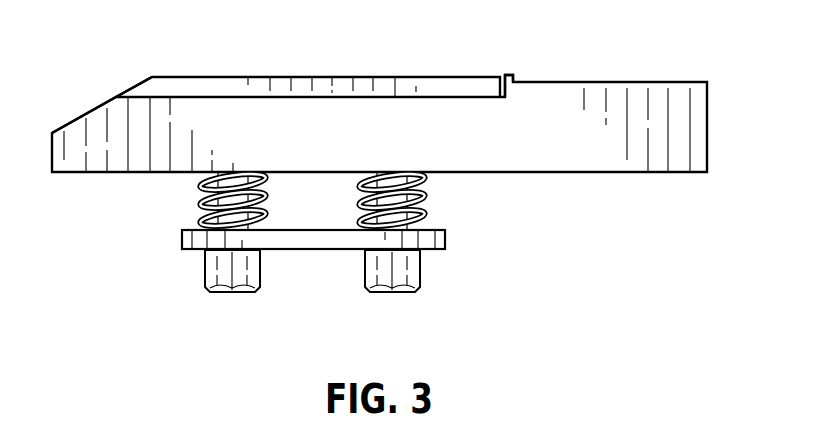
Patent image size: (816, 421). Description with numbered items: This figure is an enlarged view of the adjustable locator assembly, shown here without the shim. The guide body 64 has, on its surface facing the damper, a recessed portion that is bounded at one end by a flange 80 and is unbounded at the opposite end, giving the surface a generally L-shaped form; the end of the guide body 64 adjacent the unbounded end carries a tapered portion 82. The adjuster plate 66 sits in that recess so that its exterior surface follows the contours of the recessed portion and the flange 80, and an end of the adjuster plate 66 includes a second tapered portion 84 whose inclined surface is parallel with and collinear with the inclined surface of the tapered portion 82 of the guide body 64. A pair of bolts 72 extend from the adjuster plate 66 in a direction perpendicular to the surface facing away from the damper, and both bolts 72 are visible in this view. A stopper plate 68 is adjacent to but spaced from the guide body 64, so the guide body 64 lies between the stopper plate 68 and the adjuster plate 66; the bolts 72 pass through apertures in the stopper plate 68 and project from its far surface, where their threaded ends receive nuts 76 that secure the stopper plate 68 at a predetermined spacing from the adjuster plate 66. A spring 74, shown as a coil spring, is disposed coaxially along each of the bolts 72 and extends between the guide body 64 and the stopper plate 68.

The guide body 64 is at (707, 125).
The adjuster plate 66 is at (447, 77).
The stopper plate 68 is at (182, 245).
The bolts 72 is at (397, 193).
The spring 74 is at (428, 221).
The nuts 76 is at (260, 268).
The flange 80 is at (509, 75).
The tapered portion 82 is at (93, 108).
The second tapered portion 84 is at (139, 85).